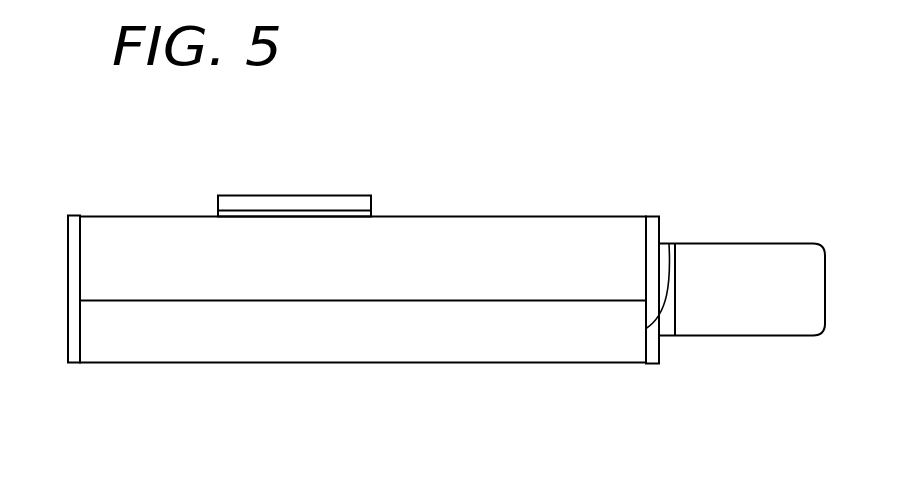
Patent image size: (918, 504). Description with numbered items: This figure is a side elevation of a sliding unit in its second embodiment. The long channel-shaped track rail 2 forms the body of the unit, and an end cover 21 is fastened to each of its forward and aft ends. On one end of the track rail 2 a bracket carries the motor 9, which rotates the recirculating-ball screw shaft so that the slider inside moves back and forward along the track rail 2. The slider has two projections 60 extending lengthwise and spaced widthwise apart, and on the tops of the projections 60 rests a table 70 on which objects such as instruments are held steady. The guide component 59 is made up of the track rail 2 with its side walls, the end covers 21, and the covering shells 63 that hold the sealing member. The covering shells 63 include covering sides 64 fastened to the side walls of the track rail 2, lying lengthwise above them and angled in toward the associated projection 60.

The track rail 2 is at (402, 345).
The motor 9 is at (759, 267).
The end cover 21 is at (75, 245).
The guide component 59 is at (565, 213).
The projection 60 is at (270, 212).
The covering shell 63 is at (448, 247).
The covering side 64 is at (78, 338).
The table 70 is at (317, 200).